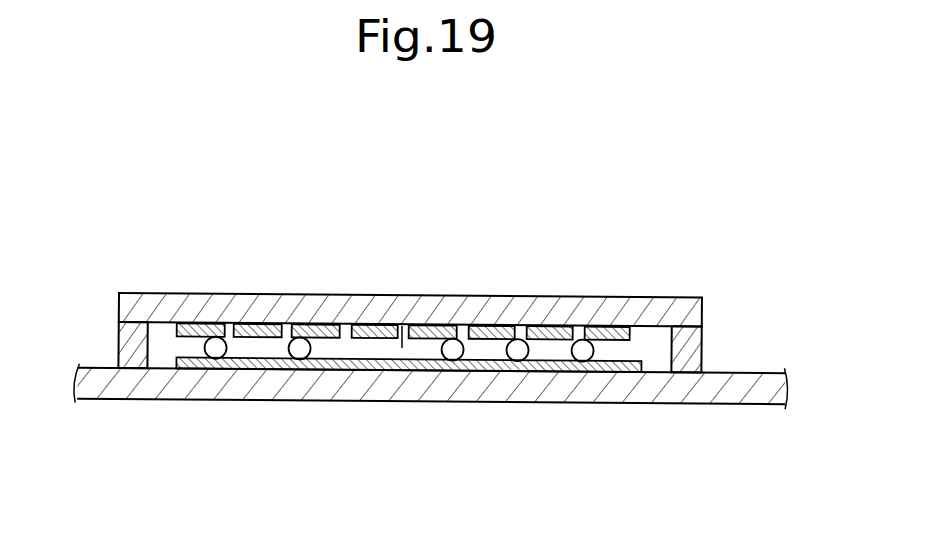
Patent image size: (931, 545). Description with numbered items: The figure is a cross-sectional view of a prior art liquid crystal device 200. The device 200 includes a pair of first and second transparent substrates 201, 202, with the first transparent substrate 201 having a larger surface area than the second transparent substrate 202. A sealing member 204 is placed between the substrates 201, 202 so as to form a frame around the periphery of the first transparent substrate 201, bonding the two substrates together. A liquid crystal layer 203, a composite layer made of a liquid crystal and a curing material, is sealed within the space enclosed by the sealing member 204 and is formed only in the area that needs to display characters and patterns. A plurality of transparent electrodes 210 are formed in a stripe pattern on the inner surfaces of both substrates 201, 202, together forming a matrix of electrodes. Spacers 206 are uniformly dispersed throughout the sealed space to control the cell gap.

The liquid crystal device 200 is at (373, 196).
The first transparent substrate 201 is at (145, 300).
The second transparent substrate 202 is at (267, 382).
The liquid crystal layer 203 is at (402, 326).
The sealing member 204 is at (137, 357).
The spacers 206 is at (583, 350).
The transparent electrodes 210 is at (272, 325).